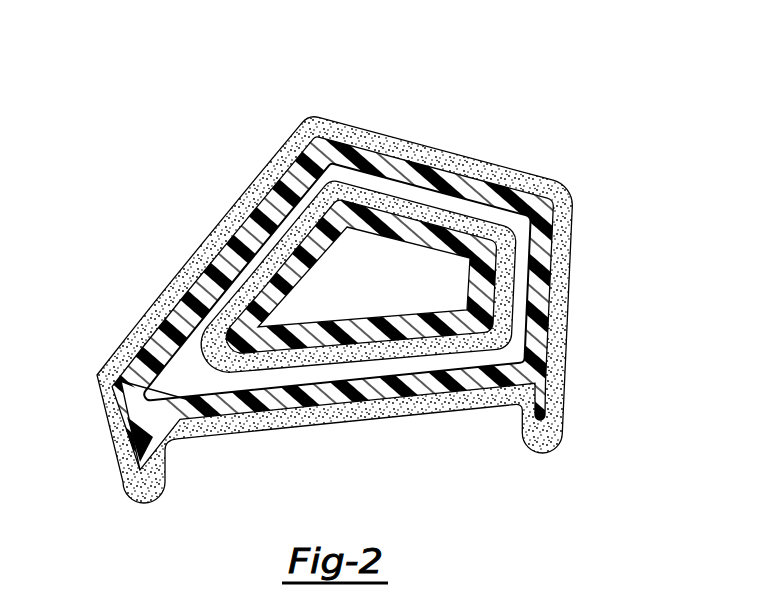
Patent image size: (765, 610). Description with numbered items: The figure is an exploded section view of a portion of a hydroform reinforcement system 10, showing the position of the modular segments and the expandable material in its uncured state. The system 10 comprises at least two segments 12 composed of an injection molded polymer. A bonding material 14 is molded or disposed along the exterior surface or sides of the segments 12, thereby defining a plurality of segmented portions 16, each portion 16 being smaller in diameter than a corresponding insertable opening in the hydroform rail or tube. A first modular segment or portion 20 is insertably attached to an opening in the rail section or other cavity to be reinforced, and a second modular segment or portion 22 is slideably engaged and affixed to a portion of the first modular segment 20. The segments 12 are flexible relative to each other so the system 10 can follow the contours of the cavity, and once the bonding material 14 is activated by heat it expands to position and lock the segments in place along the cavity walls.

The system 10 is at (622, 104).
The segment 12 is at (253, 377).
The bonding material 14 is at (498, 222).
The segmented portion 16 is at (483, 302).
The first modular segment 20 is at (300, 303).
The second modular segment 22 is at (267, 247).